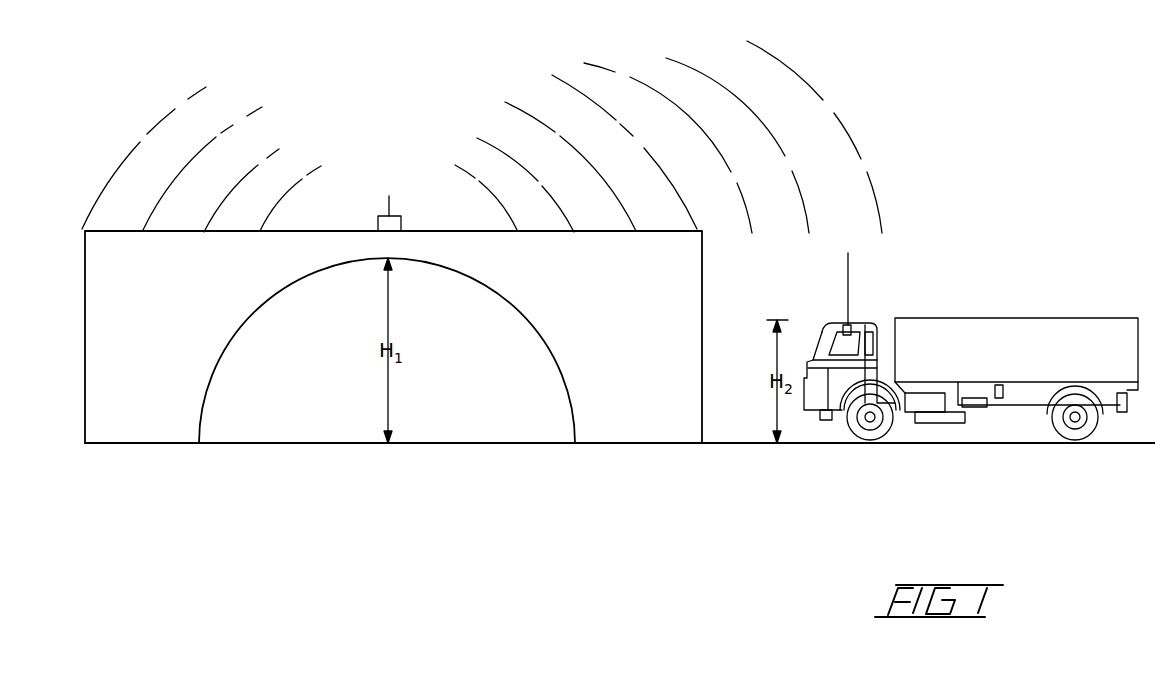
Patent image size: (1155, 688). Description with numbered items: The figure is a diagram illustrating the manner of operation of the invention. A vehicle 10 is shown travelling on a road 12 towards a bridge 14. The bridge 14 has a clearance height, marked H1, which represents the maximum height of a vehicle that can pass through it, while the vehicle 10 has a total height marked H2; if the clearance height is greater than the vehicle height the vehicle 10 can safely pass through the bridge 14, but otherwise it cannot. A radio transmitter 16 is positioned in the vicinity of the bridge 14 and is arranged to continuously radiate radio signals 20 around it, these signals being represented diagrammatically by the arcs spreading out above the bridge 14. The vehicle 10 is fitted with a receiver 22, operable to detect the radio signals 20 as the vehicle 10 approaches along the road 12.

The vehicle 10 is at (990, 331).
The road 12 is at (743, 443).
The bridge 14 is at (540, 332).
The radio transmitter 16 is at (402, 222).
The radio signals 20 is at (707, 78).
The receiver 22 is at (850, 322).